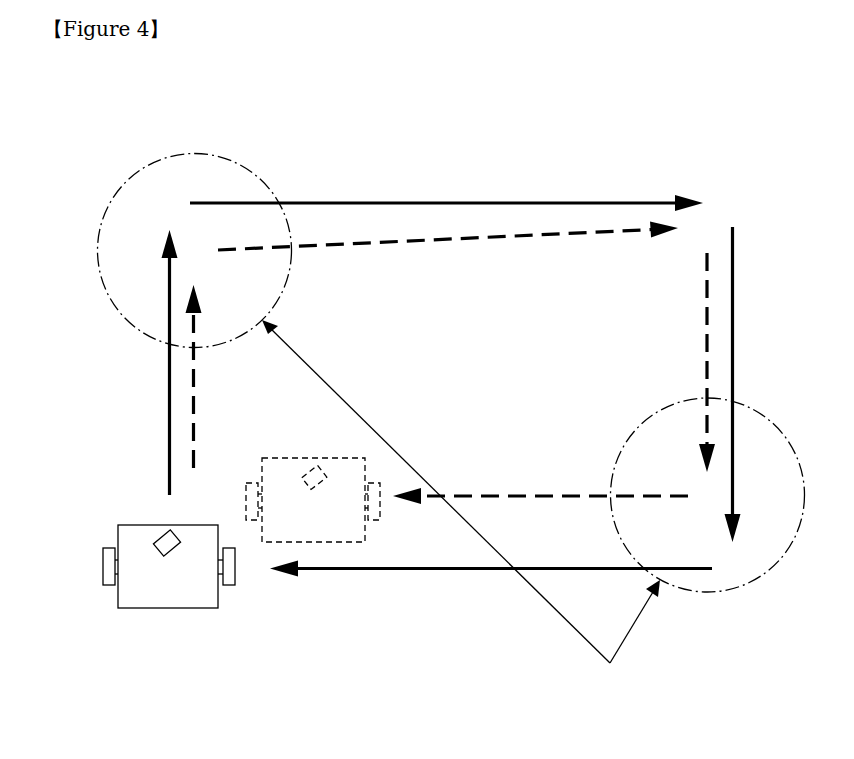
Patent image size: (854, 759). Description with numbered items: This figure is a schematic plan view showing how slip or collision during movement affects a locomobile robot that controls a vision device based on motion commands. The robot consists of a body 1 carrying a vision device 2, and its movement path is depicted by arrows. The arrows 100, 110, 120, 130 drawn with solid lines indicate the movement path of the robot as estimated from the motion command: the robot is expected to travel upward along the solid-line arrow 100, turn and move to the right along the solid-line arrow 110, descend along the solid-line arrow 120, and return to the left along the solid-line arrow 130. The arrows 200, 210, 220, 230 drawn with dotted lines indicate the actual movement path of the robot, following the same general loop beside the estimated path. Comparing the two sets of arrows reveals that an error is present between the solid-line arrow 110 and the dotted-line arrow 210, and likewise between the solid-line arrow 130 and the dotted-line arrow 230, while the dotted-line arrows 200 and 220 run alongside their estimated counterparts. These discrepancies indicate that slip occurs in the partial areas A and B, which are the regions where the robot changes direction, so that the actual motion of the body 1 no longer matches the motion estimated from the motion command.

The body 1 is at (169, 592).
The vision device 2 is at (160, 554).
The solid-line arrow 100 is at (167, 410).
The solid-line arrow 110 is at (437, 202).
The solid-line arrow 120 is at (733, 325).
The solid-line arrow 130 is at (430, 573).
The dotted-line arrow 200 is at (196, 412).
The dotted-line arrow 210 is at (457, 240).
The dotted-line arrow 220 is at (707, 345).
The dotted-line arrow 230 is at (515, 497).
The partial area A is at (197, 152).
The partial area B is at (705, 592).